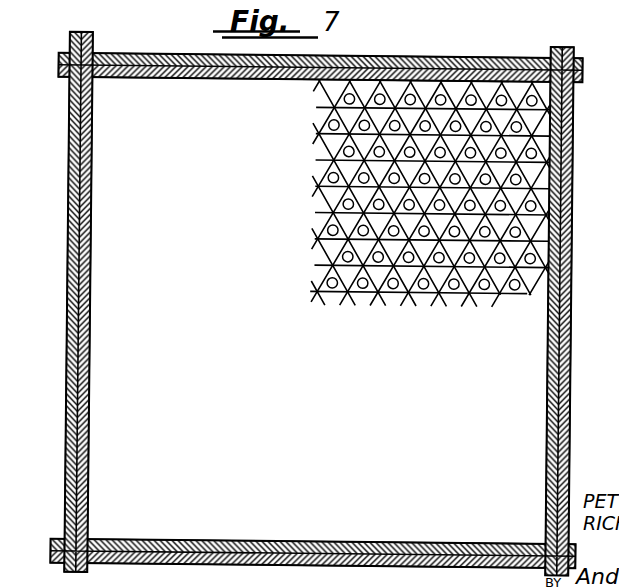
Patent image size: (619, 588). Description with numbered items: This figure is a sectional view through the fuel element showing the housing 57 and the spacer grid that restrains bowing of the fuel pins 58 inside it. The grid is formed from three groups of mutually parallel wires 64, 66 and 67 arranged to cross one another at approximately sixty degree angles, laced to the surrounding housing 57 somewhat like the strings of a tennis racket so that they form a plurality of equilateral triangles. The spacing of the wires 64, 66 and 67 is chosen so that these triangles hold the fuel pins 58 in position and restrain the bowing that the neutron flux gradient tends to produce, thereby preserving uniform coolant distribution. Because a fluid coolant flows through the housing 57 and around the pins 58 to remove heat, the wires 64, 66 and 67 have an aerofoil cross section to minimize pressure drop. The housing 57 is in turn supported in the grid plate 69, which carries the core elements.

The housing 57 is at (560, 346).
The fuel pins 58 is at (518, 168).
The wires 64 is at (400, 126).
The wires 66 is at (476, 98).
The wires 67 is at (534, 110).
The grid plate 69 is at (558, 301).